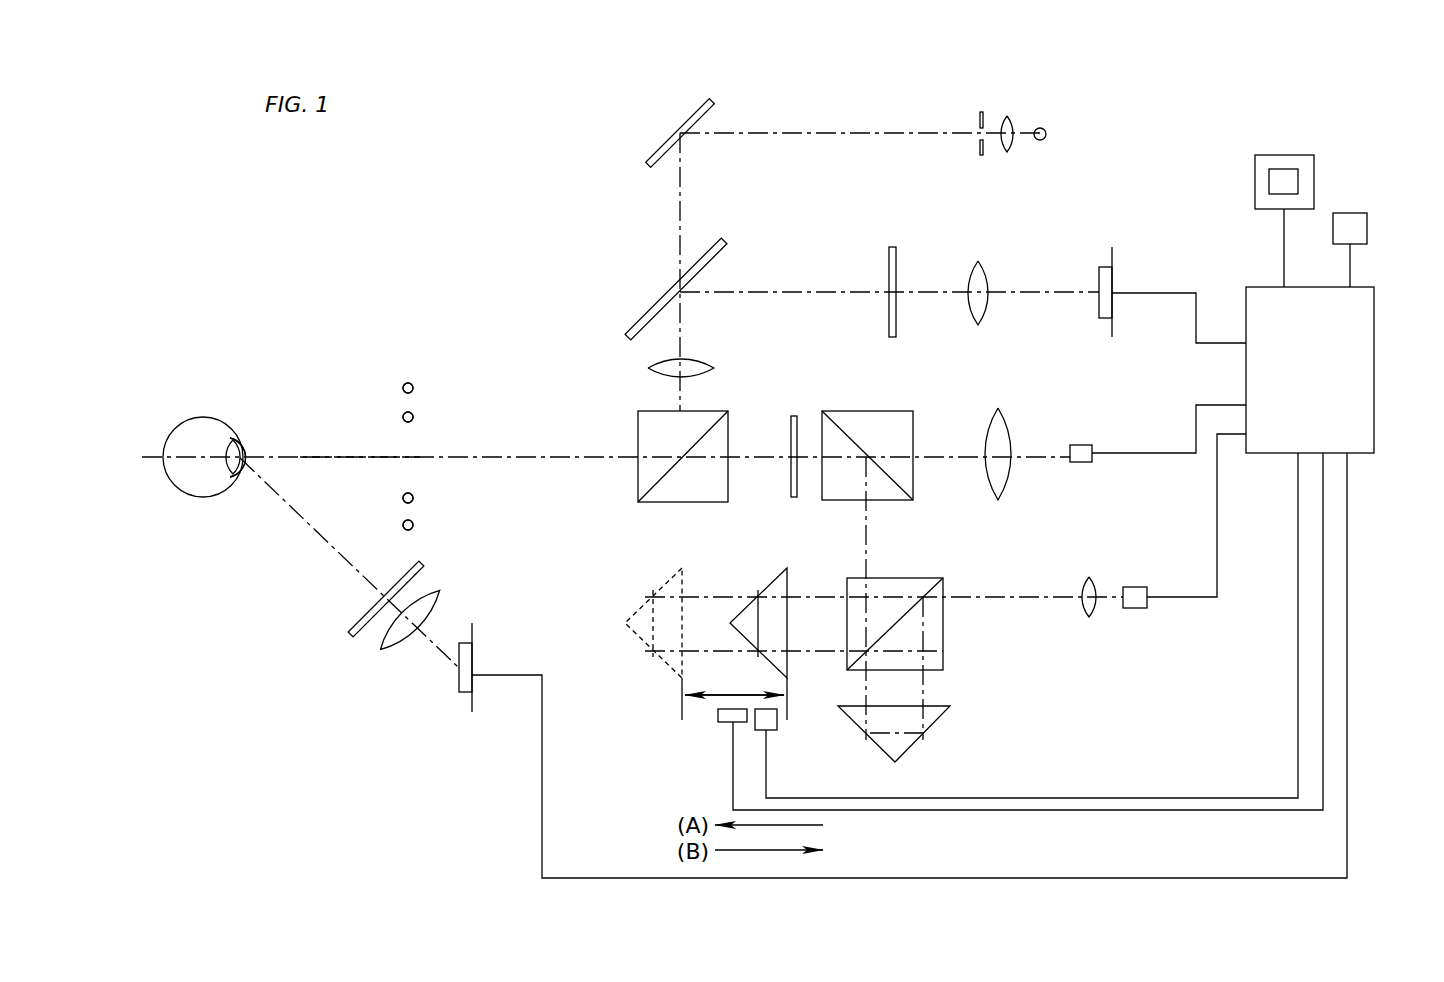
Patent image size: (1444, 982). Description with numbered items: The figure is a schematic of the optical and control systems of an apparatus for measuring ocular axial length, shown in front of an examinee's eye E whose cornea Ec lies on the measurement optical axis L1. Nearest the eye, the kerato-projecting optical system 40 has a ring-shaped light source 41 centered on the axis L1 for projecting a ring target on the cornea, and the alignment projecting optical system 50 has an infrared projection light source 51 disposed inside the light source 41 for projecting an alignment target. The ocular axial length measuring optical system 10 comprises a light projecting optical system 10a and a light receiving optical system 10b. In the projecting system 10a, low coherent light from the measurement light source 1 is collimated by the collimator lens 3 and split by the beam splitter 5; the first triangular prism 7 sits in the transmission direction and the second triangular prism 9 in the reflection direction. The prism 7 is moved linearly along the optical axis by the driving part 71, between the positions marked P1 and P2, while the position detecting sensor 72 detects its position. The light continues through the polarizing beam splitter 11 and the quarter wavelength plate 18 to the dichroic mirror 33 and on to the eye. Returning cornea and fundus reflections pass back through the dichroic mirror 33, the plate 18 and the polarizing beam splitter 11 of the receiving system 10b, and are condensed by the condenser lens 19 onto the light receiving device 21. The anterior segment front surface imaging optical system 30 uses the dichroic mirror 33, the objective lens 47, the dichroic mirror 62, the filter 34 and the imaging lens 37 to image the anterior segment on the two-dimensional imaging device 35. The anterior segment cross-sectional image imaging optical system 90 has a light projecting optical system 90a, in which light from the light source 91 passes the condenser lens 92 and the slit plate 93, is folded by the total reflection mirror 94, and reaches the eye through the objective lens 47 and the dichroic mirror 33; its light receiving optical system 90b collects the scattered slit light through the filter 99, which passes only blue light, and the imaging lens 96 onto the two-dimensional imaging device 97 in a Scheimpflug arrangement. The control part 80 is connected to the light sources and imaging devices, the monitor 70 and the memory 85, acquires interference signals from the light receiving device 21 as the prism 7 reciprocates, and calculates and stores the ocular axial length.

The examinee's eye E is at (175, 470).
The cornea Ec is at (240, 475).
The measurement optical axis L1 is at (365, 457).
The anterior segment cross-sectional image imaging optical system 90 is at (295, 365).
The kerato-projecting optical system 40 is at (387, 360).
The ring-shaped light source 41 is at (404, 385).
The alignment projecting optical system 50 is at (428, 393).
The projection light source 51 is at (412, 414).
The total reflection mirror 94 is at (662, 140).
The dichroic mirror 62 is at (680, 285).
The objective lens 47 is at (700, 366).
The dichroic mirror 33 is at (648, 470).
The quarter wavelength plate 18 is at (797, 420).
The polarizing beam splitter 11 is at (887, 496).
The condenser lens 19 is at (1000, 490).
The light receiving device 21 is at (1084, 462).
The light receiving optical system 10b is at (1053, 473).
The filter 34 is at (893, 247).
The imaging lens 37 is at (980, 262).
The anterior segment front surface imaging optical system 30 is at (1018, 265).
The two-dimensional imaging device 35 is at (1103, 305).
The slit plate 93 is at (981, 112).
The condenser lens 92 is at (1007, 117).
The light source 91 is at (1046, 130).
The light projecting optical system 90a is at (1123, 97).
The monitor 70 is at (1290, 155).
The memory 85 is at (1350, 213).
The control part 80 is at (1340, 392).
The collimator lens 3 is at (1085, 605).
The measurement light source 1 is at (1135, 590).
The beam splitter 5 is at (940, 585).
The first triangular prism 7 is at (775, 590).
The prism position P2 is at (721, 708).
The prism position P1 is at (798, 708).
The driving part 71 is at (718, 714).
The position detecting sensor 72 is at (770, 728).
The second triangular prism 9 is at (895, 745).
The ocular axial length measuring optical system 10 is at (1108, 700).
The light projecting optical system 10a is at (983, 617).
The filter 99 is at (352, 623).
The imaging lens 96 is at (385, 650).
The two-dimensional imaging device 97 is at (475, 655).
The light receiving optical system 90b is at (398, 700).